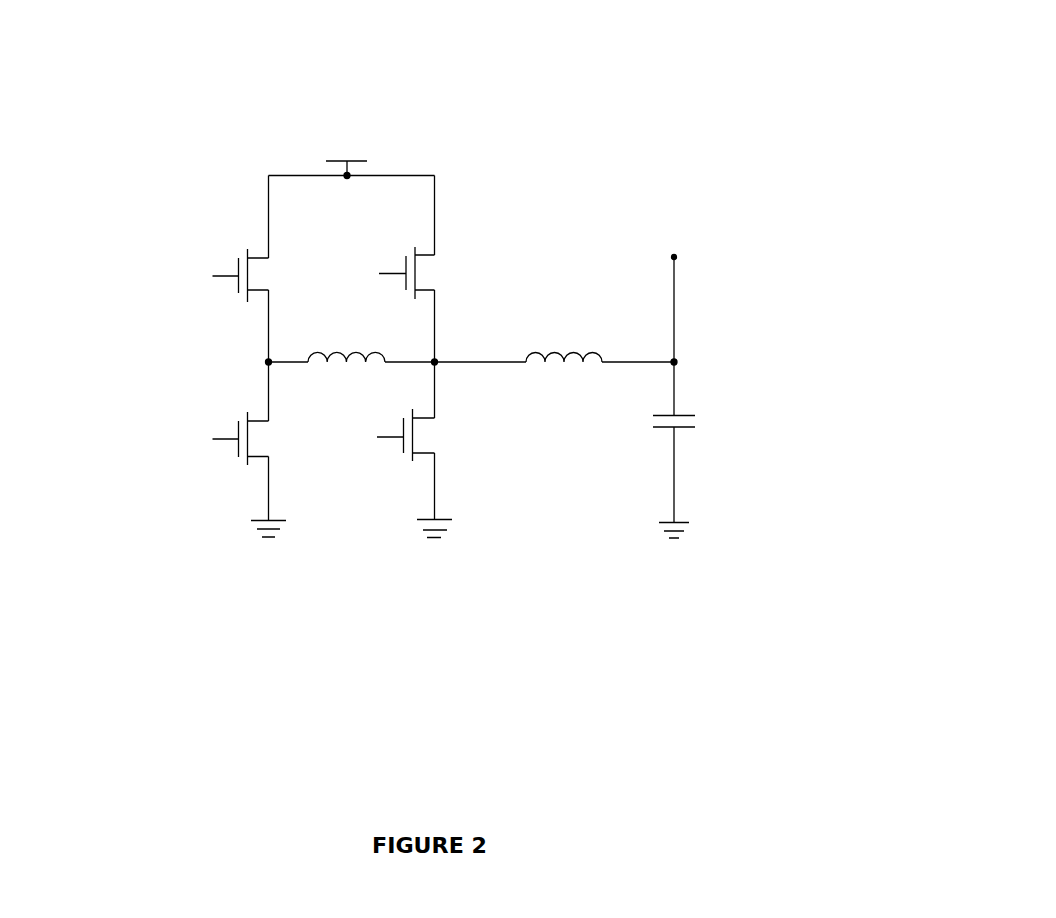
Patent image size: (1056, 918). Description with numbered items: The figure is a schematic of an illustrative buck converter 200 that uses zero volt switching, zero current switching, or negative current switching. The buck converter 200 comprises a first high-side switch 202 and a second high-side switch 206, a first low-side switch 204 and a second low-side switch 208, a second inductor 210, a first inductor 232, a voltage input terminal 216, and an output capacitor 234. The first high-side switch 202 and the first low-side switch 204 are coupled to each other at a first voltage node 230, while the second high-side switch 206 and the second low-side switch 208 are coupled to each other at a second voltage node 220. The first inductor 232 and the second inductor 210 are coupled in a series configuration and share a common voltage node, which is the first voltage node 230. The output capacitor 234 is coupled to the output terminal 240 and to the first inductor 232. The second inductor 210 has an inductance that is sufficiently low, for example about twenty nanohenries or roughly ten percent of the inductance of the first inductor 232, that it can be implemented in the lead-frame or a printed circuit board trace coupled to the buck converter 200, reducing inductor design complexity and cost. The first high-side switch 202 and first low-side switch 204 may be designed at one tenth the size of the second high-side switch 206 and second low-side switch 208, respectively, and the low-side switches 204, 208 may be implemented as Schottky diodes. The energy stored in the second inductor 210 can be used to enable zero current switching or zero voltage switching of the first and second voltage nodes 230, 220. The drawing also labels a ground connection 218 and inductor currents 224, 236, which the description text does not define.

The buck converter 200 is at (926, 93).
The high-side switch DHA 202 is at (438, 273).
The low-side switch DLA 204 is at (425, 442).
The high-side switch DHB 206 is at (227, 272).
The low-side switch DLB 208 is at (225, 425).
The inductor L2 210 is at (340, 370).
The voltage input terminal 216 is at (347, 130).
The ground 218 is at (265, 515).
The voltage node LXB 220 is at (265, 357).
The inductor current IL2 224 is at (405, 345).
The voltage node LXA 230 is at (445, 348).
The inductor L1 232 is at (570, 363).
The output capacitor COUT 234 is at (685, 407).
The inductor current IL1 236 is at (633, 338).
The output terminal 240 is at (682, 357).